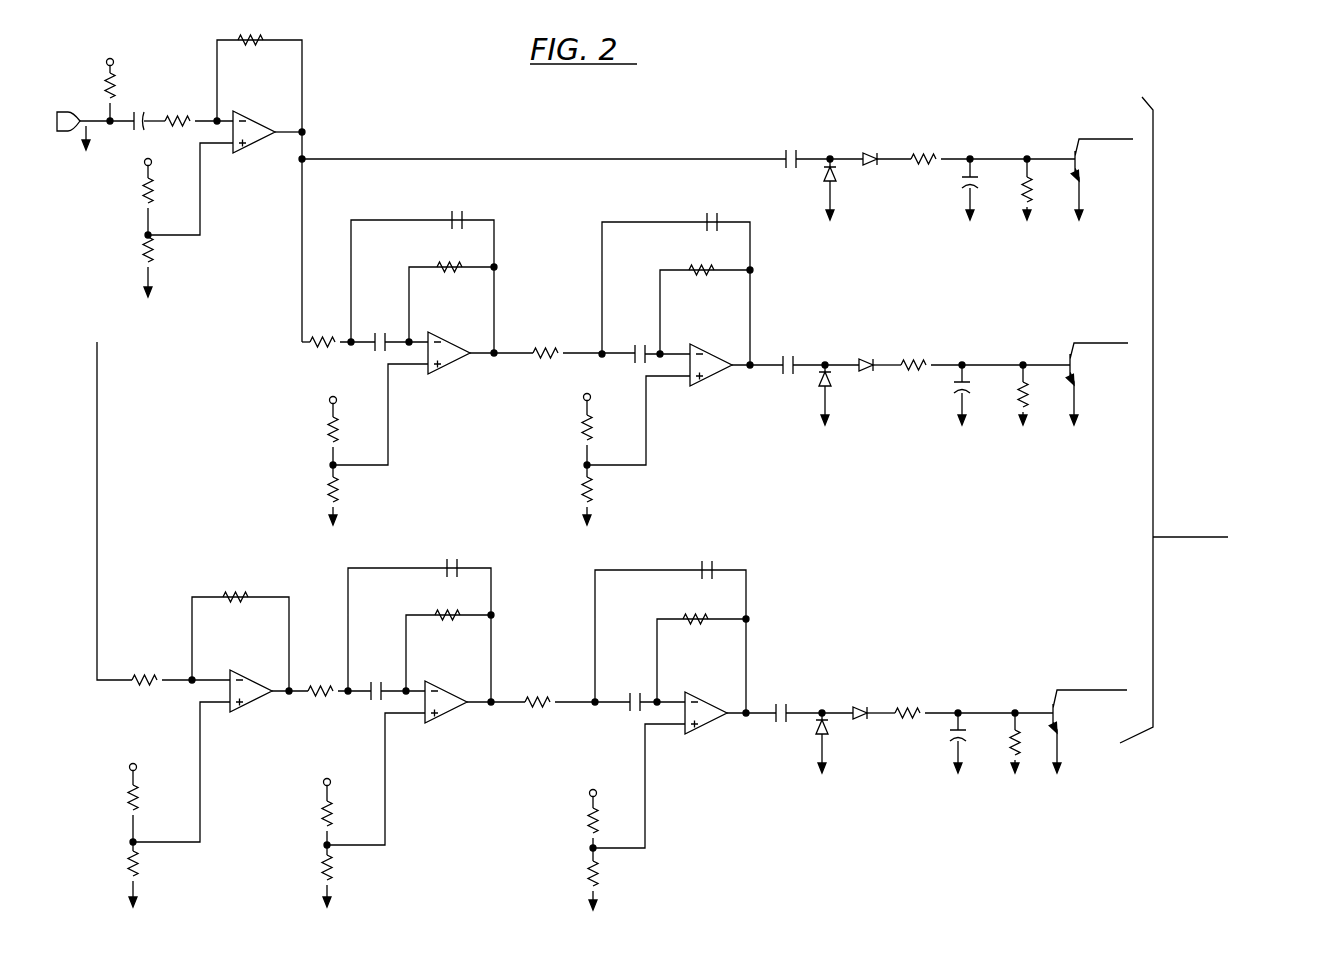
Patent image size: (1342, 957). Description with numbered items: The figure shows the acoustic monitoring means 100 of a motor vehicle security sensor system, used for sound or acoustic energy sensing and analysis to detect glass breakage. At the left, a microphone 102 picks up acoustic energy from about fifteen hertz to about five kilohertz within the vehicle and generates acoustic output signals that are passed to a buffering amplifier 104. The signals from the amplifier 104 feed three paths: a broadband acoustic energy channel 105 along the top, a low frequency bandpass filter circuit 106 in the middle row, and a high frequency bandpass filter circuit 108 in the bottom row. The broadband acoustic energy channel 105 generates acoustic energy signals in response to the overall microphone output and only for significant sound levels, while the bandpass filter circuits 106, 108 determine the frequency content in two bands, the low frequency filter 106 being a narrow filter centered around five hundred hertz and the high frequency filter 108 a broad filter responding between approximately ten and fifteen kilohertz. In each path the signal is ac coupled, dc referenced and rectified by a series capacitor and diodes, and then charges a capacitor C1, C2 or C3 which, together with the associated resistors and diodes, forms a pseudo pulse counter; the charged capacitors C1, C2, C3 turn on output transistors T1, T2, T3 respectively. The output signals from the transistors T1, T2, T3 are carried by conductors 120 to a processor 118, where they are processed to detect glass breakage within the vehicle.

The acoustic monitoring means 100 is at (938, 72).
The microphone 102 is at (60, 131).
The buffering amplifier 104 is at (264, 130).
The broadband acoustic energy channel 105 is at (855, 126).
The low frequency bandpass filter circuit 106 is at (530, 227).
The high frequency bandpass filter circuit 108 is at (307, 573).
The processor 118 is at (1261, 559).
The conductors 120 is at (1168, 537).
The output transistor T1 is at (1073, 150).
The output transistor T2 is at (1068, 346).
The output transistor T3 is at (1058, 697).
The capacitor C1 is at (955, 190).
The capacitor C2 is at (955, 390).
The capacitor C3 is at (945, 740).